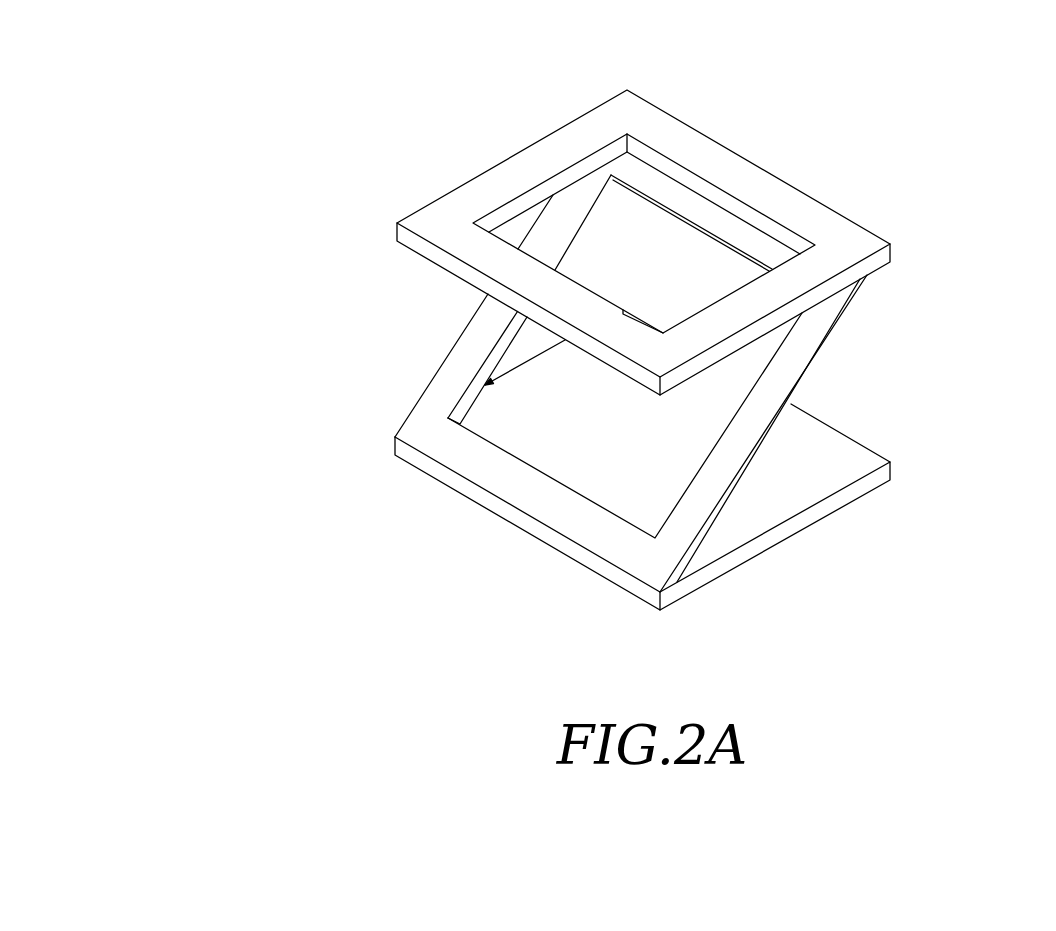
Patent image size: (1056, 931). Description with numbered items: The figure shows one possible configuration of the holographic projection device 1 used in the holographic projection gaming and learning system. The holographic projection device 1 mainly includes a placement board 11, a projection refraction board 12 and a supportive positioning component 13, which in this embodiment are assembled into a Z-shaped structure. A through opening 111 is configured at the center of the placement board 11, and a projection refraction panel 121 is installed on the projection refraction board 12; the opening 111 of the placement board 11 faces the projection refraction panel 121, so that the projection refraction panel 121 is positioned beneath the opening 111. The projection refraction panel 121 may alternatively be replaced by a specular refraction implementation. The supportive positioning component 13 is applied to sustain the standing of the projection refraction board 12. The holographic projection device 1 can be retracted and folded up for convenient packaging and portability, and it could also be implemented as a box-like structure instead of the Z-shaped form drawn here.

The holographic projection device 1 is at (607, 347).
The placement board 11 is at (522, 168).
The through opening 111 is at (692, 183).
The projection refraction board 12 is at (833, 337).
The projection refraction panel 121 is at (530, 345).
The supportive positioning component 13 is at (897, 470).